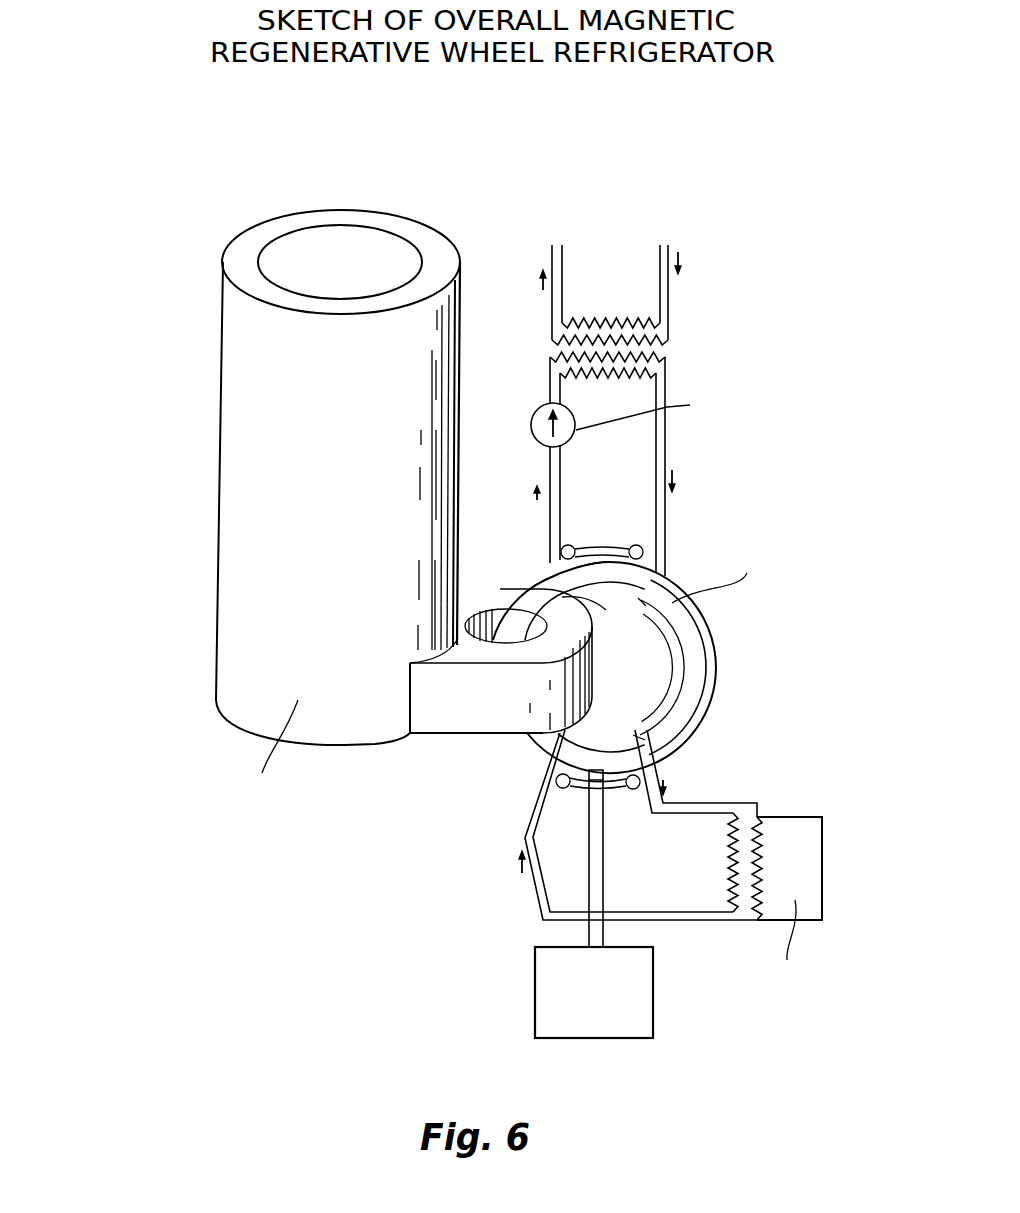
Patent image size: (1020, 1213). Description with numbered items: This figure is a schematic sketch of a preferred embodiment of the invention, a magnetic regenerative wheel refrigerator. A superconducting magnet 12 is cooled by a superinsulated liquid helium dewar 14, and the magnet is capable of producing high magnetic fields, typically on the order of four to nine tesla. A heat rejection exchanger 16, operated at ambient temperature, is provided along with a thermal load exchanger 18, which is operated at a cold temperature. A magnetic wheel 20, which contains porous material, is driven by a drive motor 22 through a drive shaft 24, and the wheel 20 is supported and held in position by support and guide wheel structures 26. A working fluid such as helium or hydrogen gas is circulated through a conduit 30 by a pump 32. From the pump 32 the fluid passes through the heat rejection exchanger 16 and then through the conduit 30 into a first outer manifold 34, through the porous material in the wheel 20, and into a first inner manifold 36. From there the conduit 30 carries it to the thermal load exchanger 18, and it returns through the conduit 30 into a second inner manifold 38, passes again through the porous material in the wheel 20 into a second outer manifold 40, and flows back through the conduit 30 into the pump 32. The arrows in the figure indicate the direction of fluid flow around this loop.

The superconducting magnet 12 is at (472, 713).
The superinsulated liquid helium dewar 14 is at (333, 486).
The heat rejection exchanger 16 is at (668, 354).
The thermal load exchanger 18 is at (792, 812).
The magnetic wheel 20 is at (692, 618).
The drive motor 22 is at (653, 968).
The drive shaft 24 is at (588, 838).
The support and guide wheel structures 26 is at (617, 546).
The conduit 30 is at (653, 480).
The pump 32 is at (548, 405).
The first outer manifold 34 is at (703, 712).
The first inner manifold 36 is at (672, 685).
The second inner manifold 38 is at (606, 610).
The second outer manifold 40 is at (536, 573).